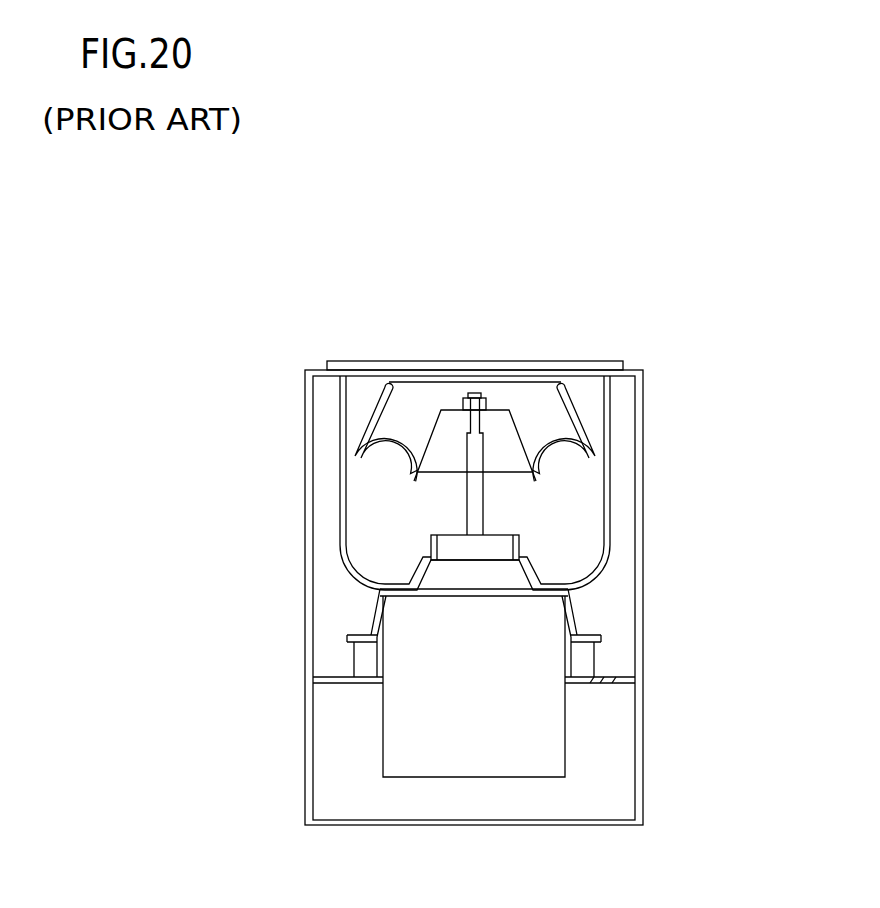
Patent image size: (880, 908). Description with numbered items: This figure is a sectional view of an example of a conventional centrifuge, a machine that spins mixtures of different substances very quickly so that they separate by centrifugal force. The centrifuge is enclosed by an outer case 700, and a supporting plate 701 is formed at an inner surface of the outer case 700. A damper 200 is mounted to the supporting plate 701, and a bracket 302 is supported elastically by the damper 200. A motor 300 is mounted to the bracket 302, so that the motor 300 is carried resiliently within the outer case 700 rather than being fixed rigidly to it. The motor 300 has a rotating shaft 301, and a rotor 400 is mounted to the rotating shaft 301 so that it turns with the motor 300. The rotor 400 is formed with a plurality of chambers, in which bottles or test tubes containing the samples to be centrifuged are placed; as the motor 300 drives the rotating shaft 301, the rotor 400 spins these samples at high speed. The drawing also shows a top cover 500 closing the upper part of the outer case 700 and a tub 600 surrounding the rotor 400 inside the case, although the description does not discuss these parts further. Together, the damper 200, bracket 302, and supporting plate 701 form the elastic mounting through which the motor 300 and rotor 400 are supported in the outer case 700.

The damper 200 is at (348, 659).
The motor 300 is at (502, 750).
The rotating shaft 301 is at (463, 507).
The bracket 302 is at (375, 613).
The rotor 400 is at (390, 435).
The top cover 500 is at (374, 356).
The tub 600 is at (613, 545).
The outer case 700 is at (645, 633).
The supporting plate 701 is at (592, 688).